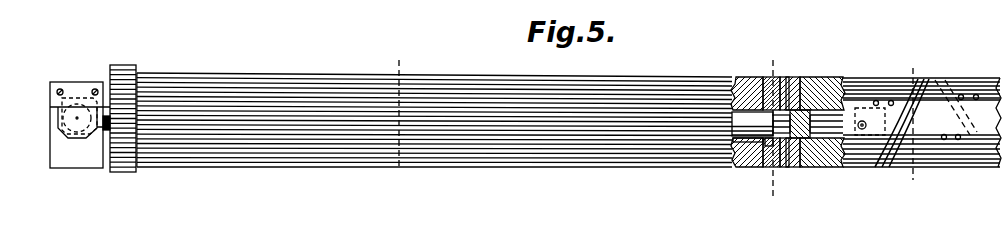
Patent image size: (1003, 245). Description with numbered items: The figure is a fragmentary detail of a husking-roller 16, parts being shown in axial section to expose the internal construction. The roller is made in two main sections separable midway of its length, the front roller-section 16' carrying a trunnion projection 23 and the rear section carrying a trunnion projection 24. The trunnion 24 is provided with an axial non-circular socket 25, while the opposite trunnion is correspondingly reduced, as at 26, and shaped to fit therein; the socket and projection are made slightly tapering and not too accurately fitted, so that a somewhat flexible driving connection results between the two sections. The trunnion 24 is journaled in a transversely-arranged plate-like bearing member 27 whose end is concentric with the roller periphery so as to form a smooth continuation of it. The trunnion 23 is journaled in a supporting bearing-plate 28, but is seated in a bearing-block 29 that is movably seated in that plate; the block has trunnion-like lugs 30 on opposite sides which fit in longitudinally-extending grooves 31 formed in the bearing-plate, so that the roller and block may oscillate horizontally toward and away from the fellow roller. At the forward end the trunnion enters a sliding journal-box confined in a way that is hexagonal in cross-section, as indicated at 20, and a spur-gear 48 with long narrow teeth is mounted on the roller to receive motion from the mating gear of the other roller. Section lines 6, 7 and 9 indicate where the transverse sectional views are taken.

The section line 6- 6 is at (398, 115).
The section line 7- 7 is at (917, 126).
The section line 9- 9 is at (774, 128).
The husking-roller 16 is at (434, 103).
The roller-section 16' is at (593, 89).
The hexagonal way 20 is at (63, 103).
The trunnion projection 23 is at (758, 115).
The trunnion projection 24 is at (801, 78).
The axial non-circular socket 25 is at (790, 170).
The reduced portion 26 is at (742, 167).
The plate-like bearing member 27 is at (787, 78).
The bearing-plate 28 is at (768, 173).
The bearing-block 29 is at (782, 78).
The trunnion-like lugs 30 is at (766, 90).
The longitudinally-extending grooves 31 is at (780, 172).
The spur-gear 48 is at (127, 58).